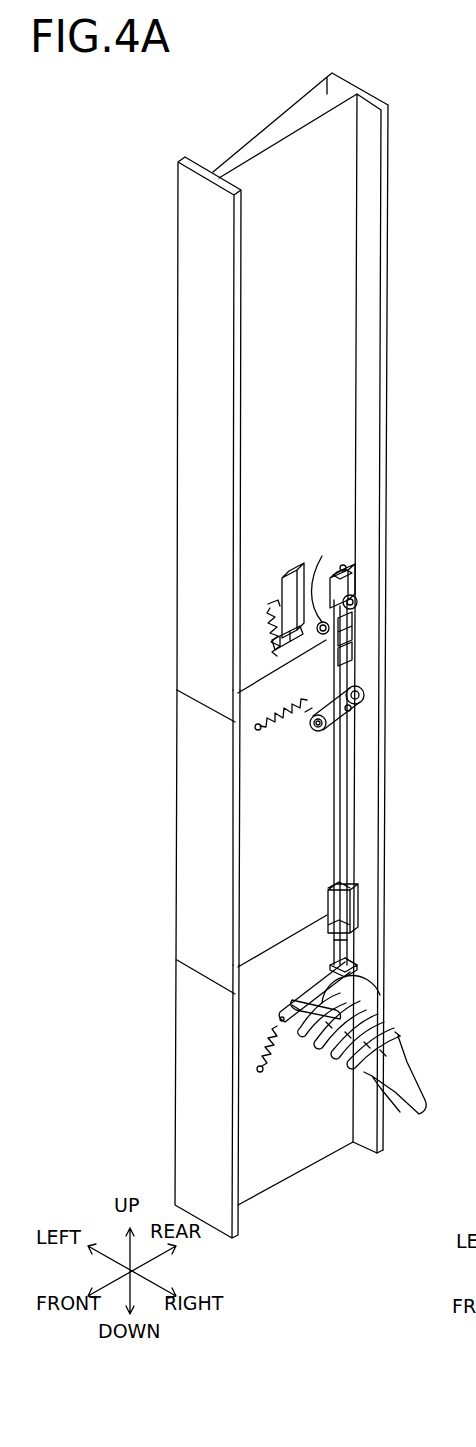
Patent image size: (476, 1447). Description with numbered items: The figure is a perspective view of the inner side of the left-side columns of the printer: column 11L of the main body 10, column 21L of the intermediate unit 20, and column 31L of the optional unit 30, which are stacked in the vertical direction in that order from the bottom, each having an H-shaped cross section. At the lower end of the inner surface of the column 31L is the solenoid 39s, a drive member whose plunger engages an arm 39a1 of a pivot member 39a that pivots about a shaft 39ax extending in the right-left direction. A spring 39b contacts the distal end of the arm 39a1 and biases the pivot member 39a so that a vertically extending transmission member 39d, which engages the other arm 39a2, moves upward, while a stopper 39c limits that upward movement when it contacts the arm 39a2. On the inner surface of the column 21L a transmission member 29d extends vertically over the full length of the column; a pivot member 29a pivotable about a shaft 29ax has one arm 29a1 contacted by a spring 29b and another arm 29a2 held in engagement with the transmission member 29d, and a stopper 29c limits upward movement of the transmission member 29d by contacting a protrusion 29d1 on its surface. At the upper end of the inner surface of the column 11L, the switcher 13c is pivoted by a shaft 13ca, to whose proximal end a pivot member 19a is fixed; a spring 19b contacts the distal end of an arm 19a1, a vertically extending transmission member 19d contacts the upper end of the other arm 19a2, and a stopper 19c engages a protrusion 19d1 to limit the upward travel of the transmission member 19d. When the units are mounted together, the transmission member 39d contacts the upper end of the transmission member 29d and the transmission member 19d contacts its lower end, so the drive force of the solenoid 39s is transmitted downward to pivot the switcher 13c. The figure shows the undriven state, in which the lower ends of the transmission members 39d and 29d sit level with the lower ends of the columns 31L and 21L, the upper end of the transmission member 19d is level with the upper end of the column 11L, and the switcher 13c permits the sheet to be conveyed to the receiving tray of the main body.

The main body 10 is at (126, 1054).
The column 11L is at (184, 1133).
The switcher 13c is at (420, 1115).
The shaft 13ca is at (345, 1012).
The pivot member 19a is at (292, 1008).
The arm 19a1 is at (332, 962).
The arm 19a2 is at (358, 963).
The spring 19b is at (268, 1075).
The stopper 19c is at (356, 900).
The transmission member 19d is at (356, 972).
The protrusion 19d1 is at (350, 940).
The intermediate unit 20 is at (117, 796).
The column 21L is at (184, 872).
The pivot member 29a is at (364, 694).
The arm 29a1 is at (316, 726).
The arm 29a2 is at (352, 708).
The shaft 29ax is at (326, 724).
The spring 29b is at (282, 702).
The stopper 29c is at (330, 628).
The transmission member 29d is at (348, 829).
The protrusion 29d1 is at (353, 652).
The optional unit 30 is at (131, 221).
The column 31L is at (184, 425).
The pivot member 39a is at (352, 582).
The arm 39a1 is at (293, 650).
The arm 39a2 is at (358, 603).
The shaft 39ax is at (343, 566).
The spring 39b is at (272, 620).
The stopper 39c is at (352, 578).
The transmission member 39d is at (353, 622).
The solenoid 39s is at (300, 580).